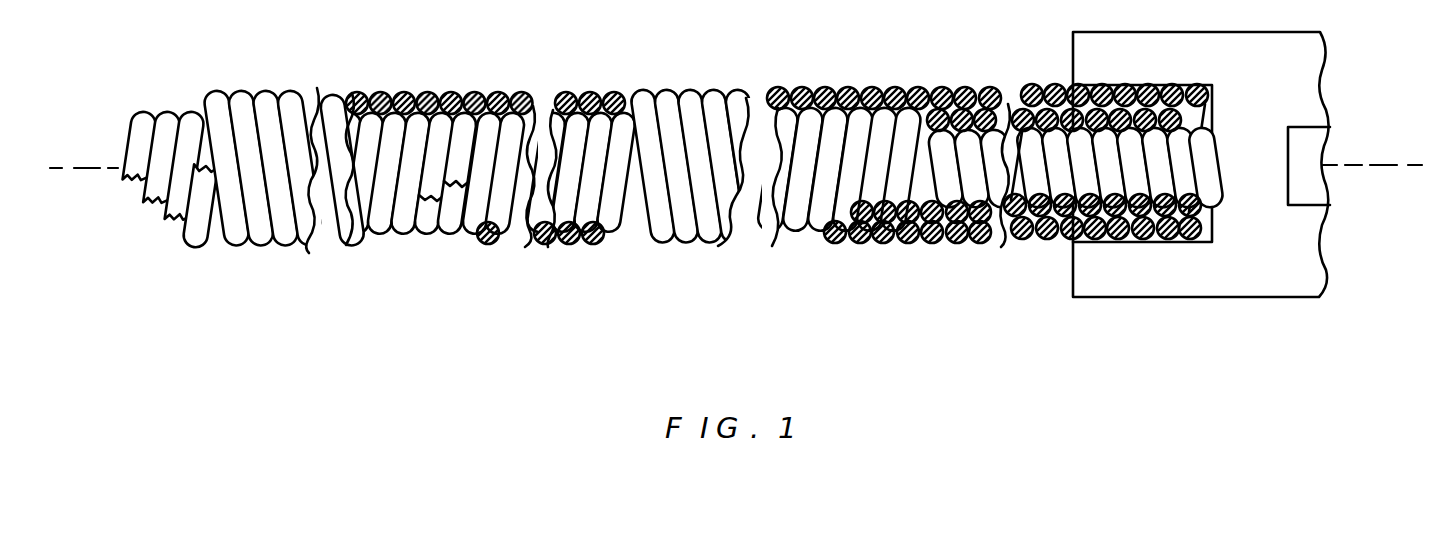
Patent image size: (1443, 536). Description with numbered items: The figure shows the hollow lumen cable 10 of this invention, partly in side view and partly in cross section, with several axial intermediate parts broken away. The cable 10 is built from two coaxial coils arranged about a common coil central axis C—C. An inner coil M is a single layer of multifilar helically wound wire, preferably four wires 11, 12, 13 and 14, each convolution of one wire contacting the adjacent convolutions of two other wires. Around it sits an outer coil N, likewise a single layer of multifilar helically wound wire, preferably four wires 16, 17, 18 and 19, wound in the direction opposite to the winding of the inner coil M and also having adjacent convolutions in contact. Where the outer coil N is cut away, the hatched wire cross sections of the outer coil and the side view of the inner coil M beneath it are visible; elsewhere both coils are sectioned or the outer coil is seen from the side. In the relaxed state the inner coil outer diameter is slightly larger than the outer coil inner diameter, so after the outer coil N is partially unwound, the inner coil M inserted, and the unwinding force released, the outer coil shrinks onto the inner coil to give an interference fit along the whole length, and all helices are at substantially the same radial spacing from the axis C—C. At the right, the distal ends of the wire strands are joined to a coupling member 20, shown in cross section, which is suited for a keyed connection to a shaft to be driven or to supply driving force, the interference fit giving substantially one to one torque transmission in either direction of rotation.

The hollow lumen cable 10 is at (651, 78).
The wire 11 is at (847, 200).
The wire 12 is at (900, 118).
The wire 13 is at (806, 168).
The wire 14 is at (833, 130).
The wire 16 is at (332, 100).
The wire 17 is at (440, 234).
The wire 18 is at (467, 234).
The wire 19 is at (318, 96).
The coupling member 20 is at (1142, 287).
The outer coil N is at (347, 233).
The inner coil M is at (547, 214).
The coil central axis C is at (88, 166).